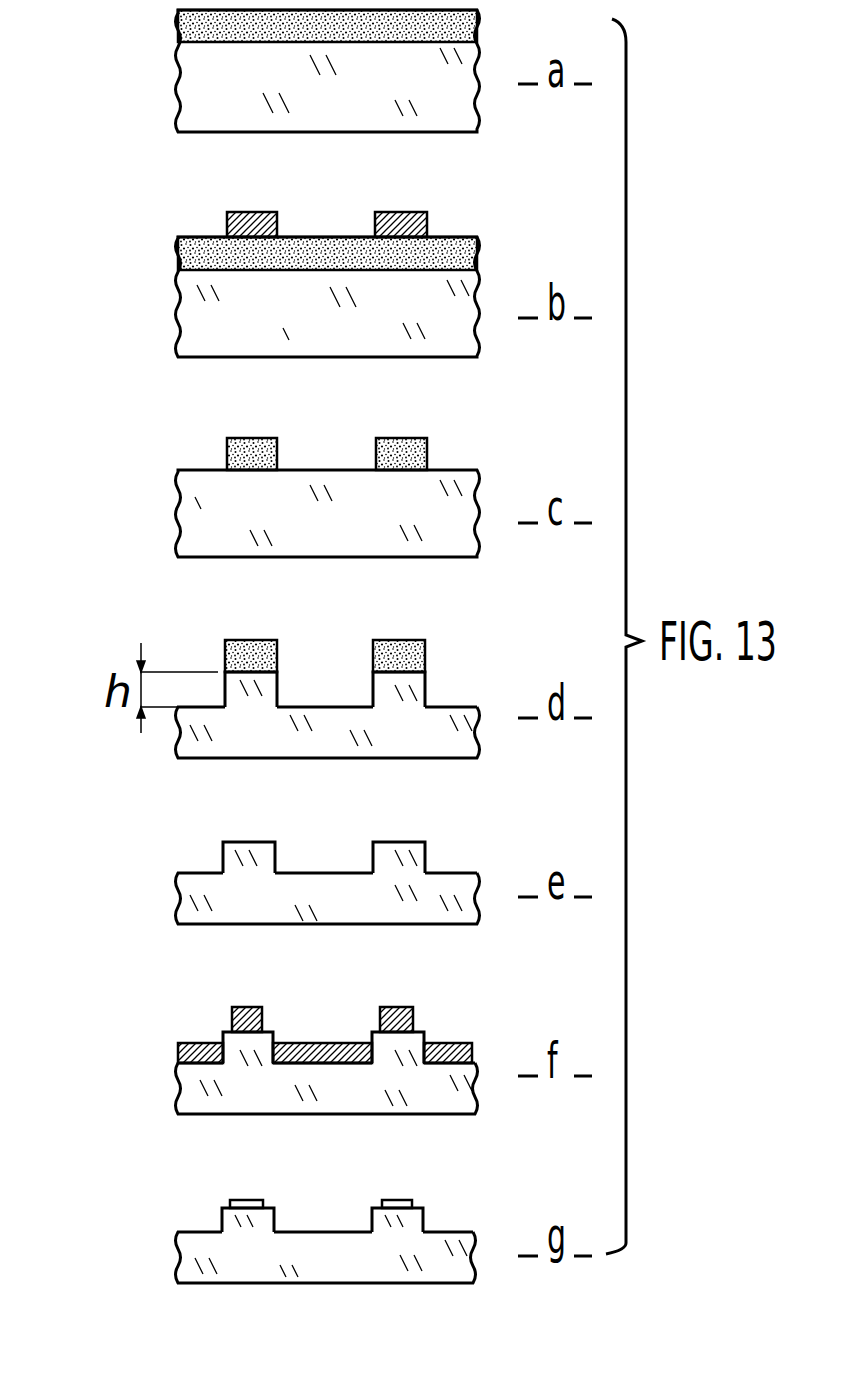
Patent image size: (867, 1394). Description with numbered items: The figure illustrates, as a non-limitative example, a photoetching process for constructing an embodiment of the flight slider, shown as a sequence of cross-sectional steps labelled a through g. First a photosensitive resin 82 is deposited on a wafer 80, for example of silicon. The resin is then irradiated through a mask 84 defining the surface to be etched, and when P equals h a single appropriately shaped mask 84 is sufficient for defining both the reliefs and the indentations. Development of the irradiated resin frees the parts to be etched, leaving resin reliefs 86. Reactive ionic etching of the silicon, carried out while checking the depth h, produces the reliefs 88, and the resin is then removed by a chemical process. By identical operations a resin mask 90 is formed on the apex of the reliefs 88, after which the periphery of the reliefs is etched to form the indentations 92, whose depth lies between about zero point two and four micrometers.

The wafer 80 is at (203, 85).
The photosensitive resin 82 is at (202, 26).
The mask 84 is at (262, 222).
The resin reliefs 86 is at (250, 452).
The reliefs 88 is at (378, 694).
The resin mask 90 is at (380, 1018).
The indentations 92 is at (272, 1207).